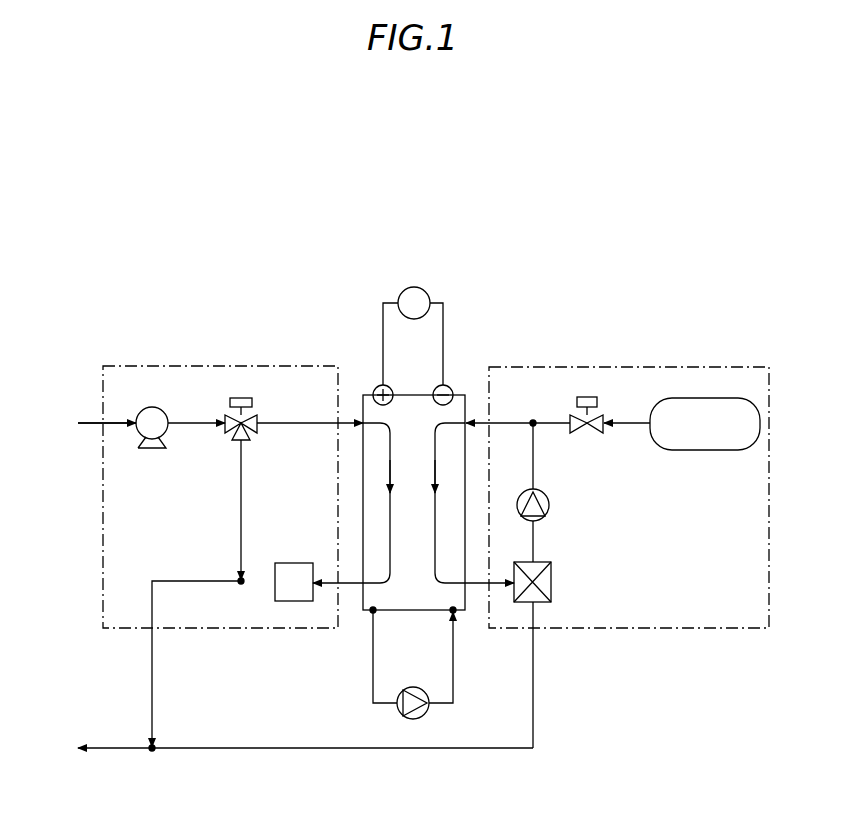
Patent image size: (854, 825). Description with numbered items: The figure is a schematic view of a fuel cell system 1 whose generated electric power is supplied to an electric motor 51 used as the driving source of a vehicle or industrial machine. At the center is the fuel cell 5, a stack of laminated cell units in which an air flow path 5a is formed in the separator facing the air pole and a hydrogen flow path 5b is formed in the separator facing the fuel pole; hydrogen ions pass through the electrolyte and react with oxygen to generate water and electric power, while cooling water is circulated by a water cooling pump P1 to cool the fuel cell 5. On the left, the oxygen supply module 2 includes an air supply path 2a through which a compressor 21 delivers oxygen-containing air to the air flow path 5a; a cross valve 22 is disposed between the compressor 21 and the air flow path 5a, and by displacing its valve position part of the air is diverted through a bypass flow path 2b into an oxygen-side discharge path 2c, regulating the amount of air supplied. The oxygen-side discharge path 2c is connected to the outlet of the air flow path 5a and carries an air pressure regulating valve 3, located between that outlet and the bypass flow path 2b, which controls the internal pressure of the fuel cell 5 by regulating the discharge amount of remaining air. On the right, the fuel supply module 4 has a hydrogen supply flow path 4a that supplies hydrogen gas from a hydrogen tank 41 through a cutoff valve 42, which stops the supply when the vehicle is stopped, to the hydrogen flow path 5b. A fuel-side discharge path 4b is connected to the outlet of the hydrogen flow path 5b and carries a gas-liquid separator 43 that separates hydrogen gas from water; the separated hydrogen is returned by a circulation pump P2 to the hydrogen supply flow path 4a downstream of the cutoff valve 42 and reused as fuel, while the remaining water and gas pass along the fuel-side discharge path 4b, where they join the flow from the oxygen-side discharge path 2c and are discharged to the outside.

The fuel cell system 1 is at (116, 271).
The oxygen supply module 2 is at (157, 365).
The air supply path 2a is at (112, 425).
The bypass flow path 2b is at (243, 478).
The oxygen-side discharge path 2c is at (188, 580).
The air pressure regulating valve 3 is at (294, 563).
The fuel supply module 4 is at (660, 367).
The hydrogen supply flow path 4a is at (513, 423).
The fuel-side discharge path 4b is at (533, 690).
The fuel cell 5 is at (414, 395).
The air flow path 5a is at (391, 483).
The hydrogen flow path 5b is at (436, 561).
The compressor 21 is at (151, 408).
The cross valve 22 is at (250, 398).
The hydrogen tank 41 is at (718, 450).
The cutoff valve 42 is at (588, 436).
The gas-liquid separator 43 is at (552, 582).
The electric motor 51 is at (411, 287).
The water cooling pump P1 is at (418, 687).
The circulation pump P2 is at (550, 505).